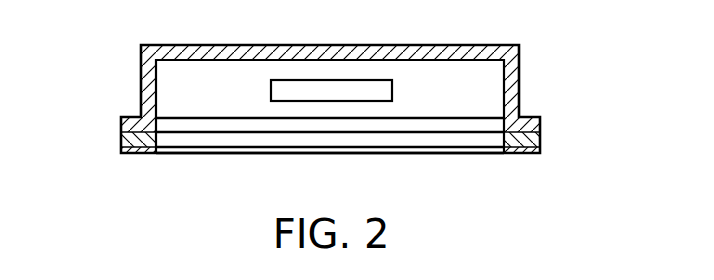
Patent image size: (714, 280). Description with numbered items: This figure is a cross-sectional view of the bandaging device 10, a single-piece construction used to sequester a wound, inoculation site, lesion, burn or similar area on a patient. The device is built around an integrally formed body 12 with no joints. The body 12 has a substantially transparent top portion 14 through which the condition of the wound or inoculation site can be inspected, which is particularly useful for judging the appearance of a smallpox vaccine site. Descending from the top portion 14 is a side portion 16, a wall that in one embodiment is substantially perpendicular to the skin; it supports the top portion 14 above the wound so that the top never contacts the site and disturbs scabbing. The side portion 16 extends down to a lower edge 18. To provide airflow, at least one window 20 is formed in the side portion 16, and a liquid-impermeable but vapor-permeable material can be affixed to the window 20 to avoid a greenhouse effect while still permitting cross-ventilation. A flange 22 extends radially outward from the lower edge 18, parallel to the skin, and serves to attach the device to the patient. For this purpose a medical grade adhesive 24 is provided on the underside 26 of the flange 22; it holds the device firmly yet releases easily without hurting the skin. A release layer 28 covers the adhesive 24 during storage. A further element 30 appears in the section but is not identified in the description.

The bandaging device 10 is at (645, 28).
The body 12 is at (200, 89).
The top portion 14 is at (293, 44).
The side portion 16 is at (140, 60).
The lower edge 18 is at (520, 117).
The window 20 is at (373, 81).
The flange 22 is at (542, 126).
The medical grade adhesive 24 is at (122, 141).
The underside 26 is at (530, 135).
The release layer 28 is at (136, 154).
The base plate 30 is at (502, 120).